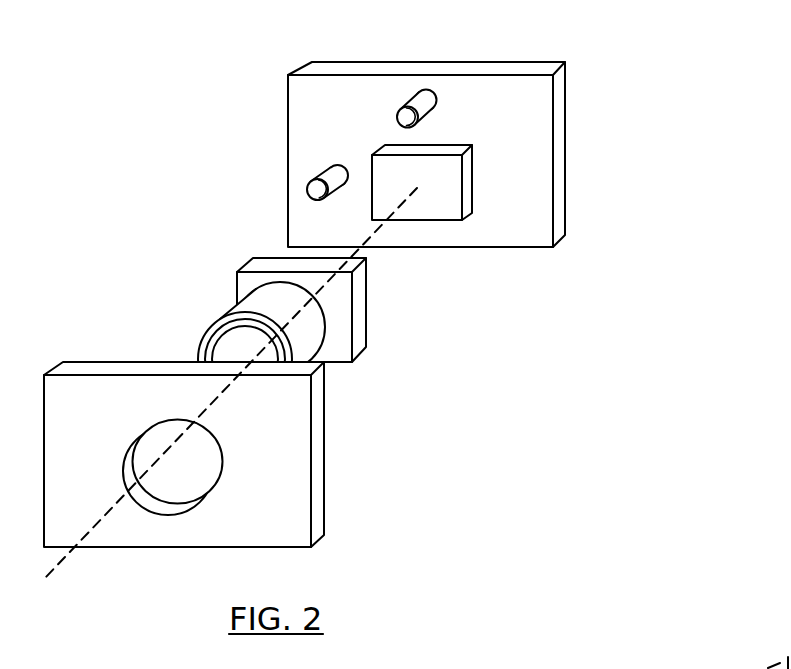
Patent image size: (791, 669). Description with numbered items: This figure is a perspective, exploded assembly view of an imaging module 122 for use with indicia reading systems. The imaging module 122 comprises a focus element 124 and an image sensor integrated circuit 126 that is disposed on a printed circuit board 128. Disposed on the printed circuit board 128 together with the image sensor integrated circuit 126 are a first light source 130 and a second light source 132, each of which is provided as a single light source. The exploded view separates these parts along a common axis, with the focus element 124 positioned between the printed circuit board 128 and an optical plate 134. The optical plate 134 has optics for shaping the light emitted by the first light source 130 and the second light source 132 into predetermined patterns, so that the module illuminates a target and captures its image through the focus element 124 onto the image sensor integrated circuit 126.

The imaging module 122 is at (373, 295).
The focus element 124 is at (206, 306).
The image sensor integrated circuit 126 is at (467, 190).
The printed circuit board 128 is at (428, 130).
The first light source 130 is at (418, 97).
The second light source 132 is at (330, 168).
The optical plate 134 is at (282, 466).